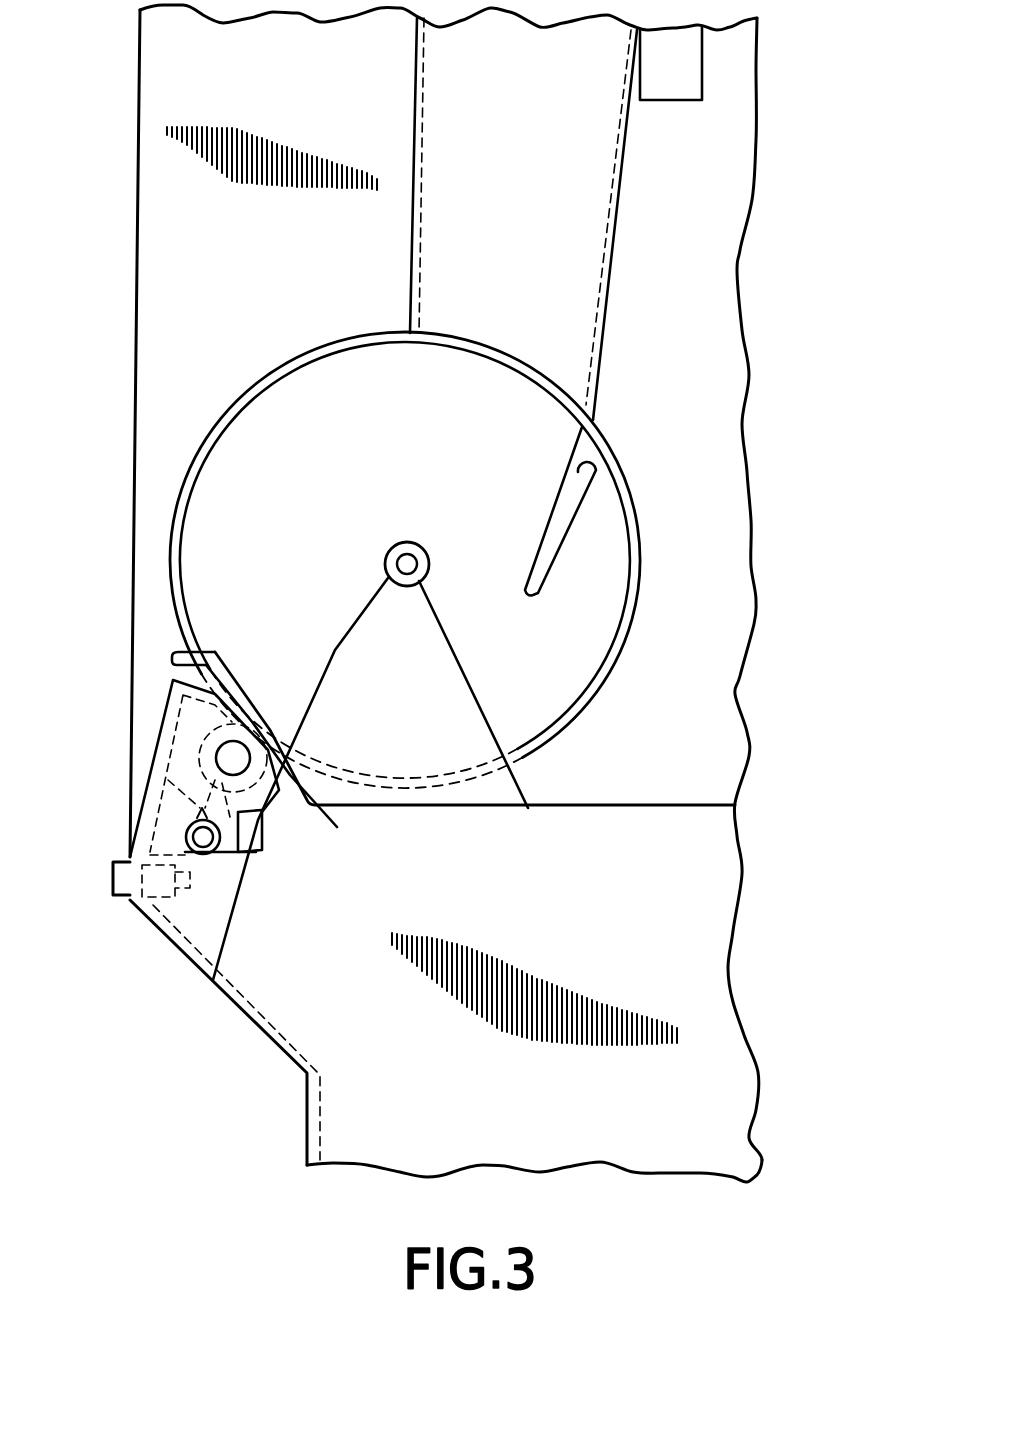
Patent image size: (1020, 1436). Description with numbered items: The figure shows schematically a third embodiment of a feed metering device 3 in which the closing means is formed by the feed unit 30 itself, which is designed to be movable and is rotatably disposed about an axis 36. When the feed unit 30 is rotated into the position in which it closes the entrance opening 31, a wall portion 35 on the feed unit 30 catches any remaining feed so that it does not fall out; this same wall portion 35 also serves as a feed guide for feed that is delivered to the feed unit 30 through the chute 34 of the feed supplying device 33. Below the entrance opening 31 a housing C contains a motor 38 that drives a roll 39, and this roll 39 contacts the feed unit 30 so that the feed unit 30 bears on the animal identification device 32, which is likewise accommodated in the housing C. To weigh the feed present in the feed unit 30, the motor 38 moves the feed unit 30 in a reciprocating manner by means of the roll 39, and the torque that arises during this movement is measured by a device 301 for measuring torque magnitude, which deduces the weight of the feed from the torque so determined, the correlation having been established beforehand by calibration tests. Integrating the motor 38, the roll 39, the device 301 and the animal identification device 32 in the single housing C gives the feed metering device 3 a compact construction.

The feed metering device 3 is at (638, 512).
The feed unit 30 is at (598, 678).
The entrance opening 31 is at (330, 345).
The animal identification device 32 is at (193, 917).
The feed supplying device 33 is at (680, 65).
The chute 34 is at (582, 220).
The wall portion 35 is at (563, 495).
The axis 36 is at (406, 565).
The motor 38 is at (218, 848).
The roll 39 is at (258, 772).
The device for measuring torque magnitude 301 is at (250, 832).
The housing C is at (228, 942).